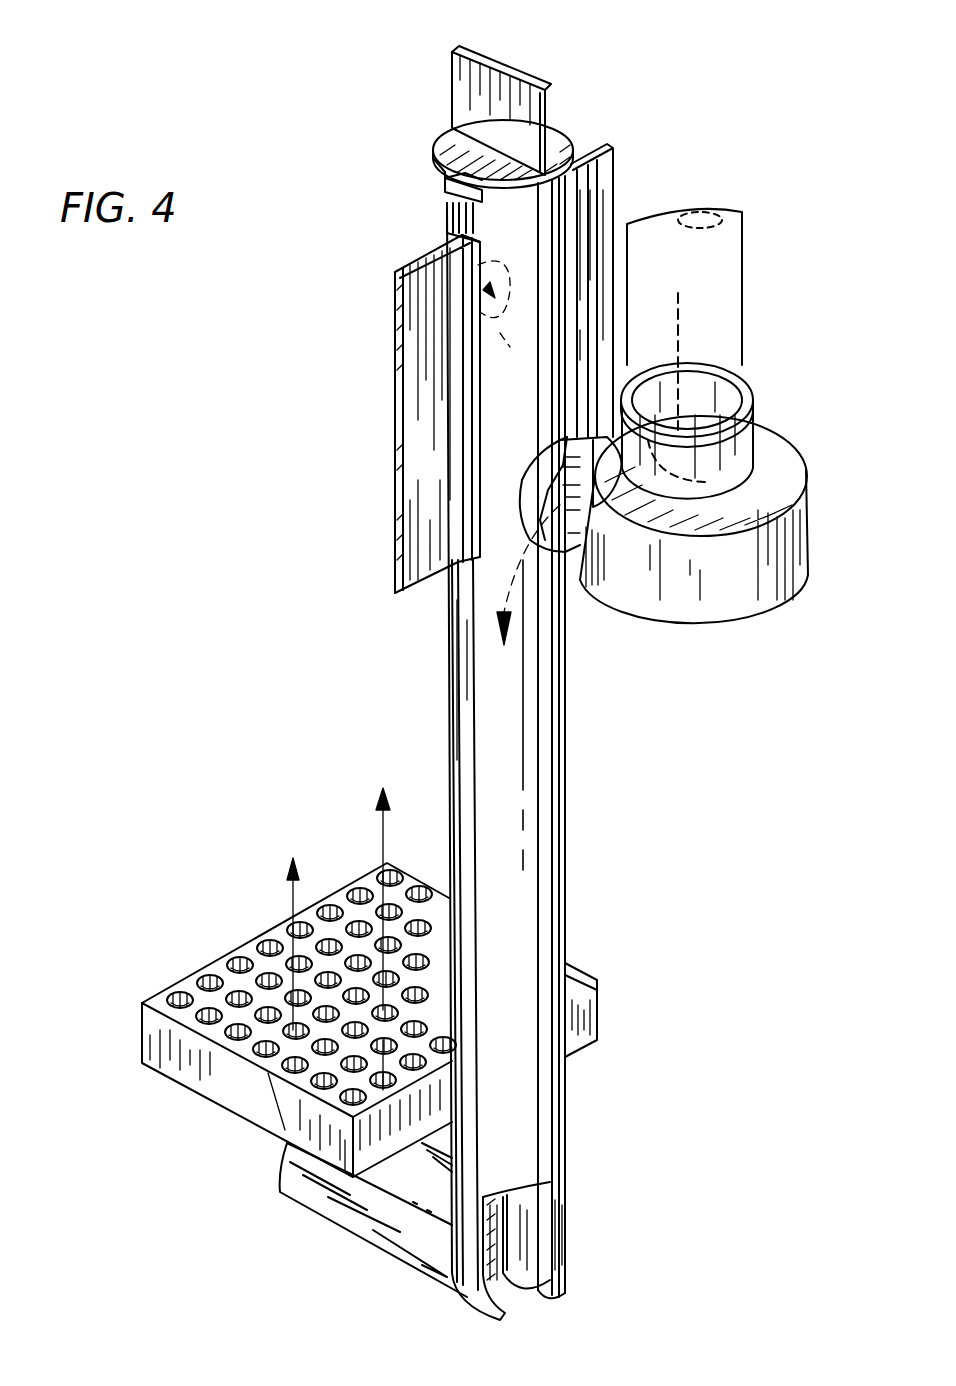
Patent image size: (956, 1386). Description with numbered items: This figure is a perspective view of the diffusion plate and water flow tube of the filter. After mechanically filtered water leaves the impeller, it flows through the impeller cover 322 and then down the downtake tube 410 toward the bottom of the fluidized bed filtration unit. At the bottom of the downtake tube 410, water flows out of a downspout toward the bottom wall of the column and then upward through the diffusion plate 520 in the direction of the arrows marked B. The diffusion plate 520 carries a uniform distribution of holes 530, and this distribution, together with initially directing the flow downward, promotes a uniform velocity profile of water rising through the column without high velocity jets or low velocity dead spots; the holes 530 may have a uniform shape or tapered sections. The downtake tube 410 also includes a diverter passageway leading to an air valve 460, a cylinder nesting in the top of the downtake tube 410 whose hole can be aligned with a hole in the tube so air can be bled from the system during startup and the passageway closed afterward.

The downtake tube 410 is at (525, 883).
The air valve 460 is at (485, 62).
The impeller cover 322 is at (690, 600).
The diffusion plate 520 is at (270, 982).
The holes 530 is at (180, 998).